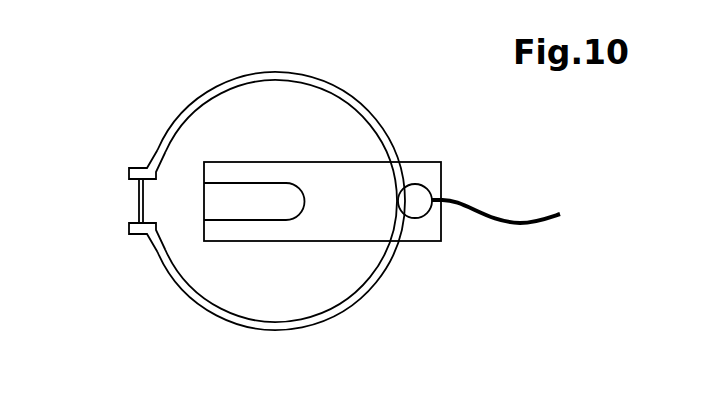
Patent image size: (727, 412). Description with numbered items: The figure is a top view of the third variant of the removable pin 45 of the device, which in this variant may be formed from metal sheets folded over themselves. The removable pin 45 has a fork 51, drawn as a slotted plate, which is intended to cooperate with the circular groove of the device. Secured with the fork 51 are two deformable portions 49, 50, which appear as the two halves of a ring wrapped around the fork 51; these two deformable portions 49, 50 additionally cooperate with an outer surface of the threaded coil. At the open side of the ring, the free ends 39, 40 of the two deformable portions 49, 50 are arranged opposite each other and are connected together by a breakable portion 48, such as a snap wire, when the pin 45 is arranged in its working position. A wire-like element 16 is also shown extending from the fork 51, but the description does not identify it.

The removable pin 45 is at (227, 184).
The deformable portion 49 is at (248, 82).
The deformable portion 50 is at (222, 316).
The free end 39 is at (140, 167).
The free end 40 is at (140, 233).
The breakable portion 48 is at (140, 195).
The fork 51 is at (344, 226).
The wire 16 is at (524, 222).